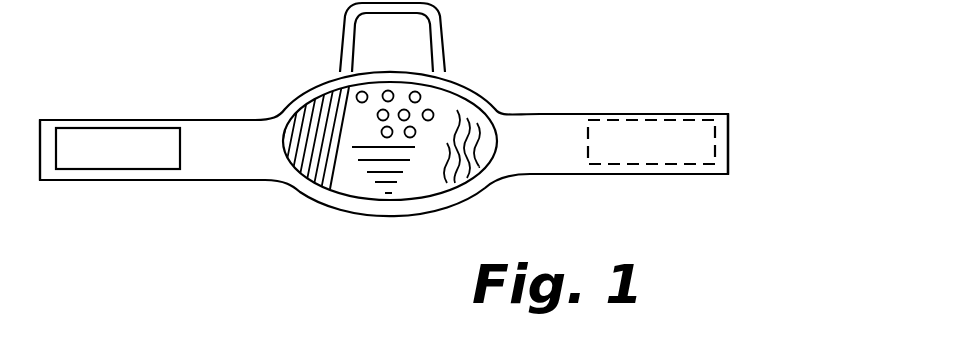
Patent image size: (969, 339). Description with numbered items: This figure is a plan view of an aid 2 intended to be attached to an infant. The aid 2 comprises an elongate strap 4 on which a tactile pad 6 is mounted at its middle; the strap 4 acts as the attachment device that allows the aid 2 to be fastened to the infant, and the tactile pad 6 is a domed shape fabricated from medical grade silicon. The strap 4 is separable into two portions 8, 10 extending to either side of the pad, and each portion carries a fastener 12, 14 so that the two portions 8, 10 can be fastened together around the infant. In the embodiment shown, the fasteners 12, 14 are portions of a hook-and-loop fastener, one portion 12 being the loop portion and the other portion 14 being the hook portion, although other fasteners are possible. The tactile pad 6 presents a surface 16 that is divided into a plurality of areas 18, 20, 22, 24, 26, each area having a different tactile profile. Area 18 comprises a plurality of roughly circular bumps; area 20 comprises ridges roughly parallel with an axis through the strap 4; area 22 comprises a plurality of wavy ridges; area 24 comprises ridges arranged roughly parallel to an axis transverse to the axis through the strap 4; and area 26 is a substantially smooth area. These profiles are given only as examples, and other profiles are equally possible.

The aid 2 is at (500, 66).
The strap 4 is at (237, 181).
The tactile pad 6 is at (366, 231).
The strap portion 8 is at (137, 181).
The strap portion 10 is at (663, 175).
The fastener 12 is at (130, 127).
The fastener 14 is at (658, 121).
The surface 16 is at (332, 175).
The area 18 is at (436, 94).
The area 20 is at (410, 188).
The area 22 is at (492, 139).
The area 24 is at (346, 86).
The area 26 is at (342, 187).